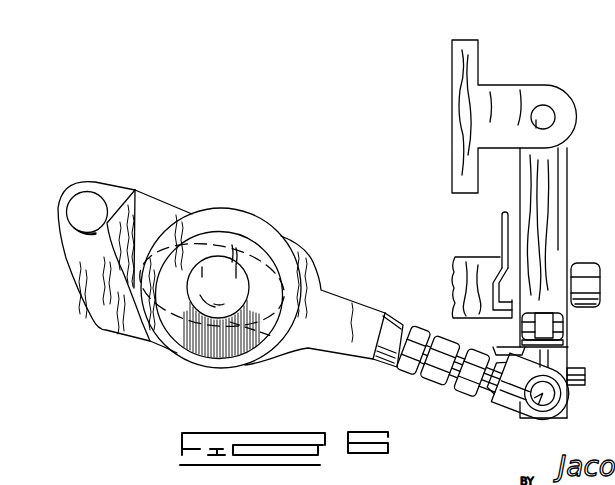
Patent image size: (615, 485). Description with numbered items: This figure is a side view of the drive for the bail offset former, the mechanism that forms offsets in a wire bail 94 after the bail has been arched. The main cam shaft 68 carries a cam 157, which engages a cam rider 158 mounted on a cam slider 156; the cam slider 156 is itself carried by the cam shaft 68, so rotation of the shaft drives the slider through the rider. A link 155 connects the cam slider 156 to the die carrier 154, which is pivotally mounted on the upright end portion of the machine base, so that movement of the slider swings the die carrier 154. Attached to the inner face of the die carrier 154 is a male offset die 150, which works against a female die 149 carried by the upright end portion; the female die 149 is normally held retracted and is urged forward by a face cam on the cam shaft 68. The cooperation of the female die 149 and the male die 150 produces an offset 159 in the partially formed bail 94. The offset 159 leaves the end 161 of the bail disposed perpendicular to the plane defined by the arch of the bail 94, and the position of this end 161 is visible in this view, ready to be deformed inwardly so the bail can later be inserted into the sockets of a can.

The main cam shaft 68 is at (228, 289).
The bail 94 is at (503, 217).
The female die 149 is at (460, 282).
The male offset die 150 is at (507, 290).
The die carrier 154 is at (562, 192).
The link 155 is at (423, 367).
The cam slider 156 is at (300, 247).
The cam 157 is at (160, 218).
The cam rider 158 is at (80, 213).
The offset 159 is at (495, 257).
The bail end 161 is at (512, 318).